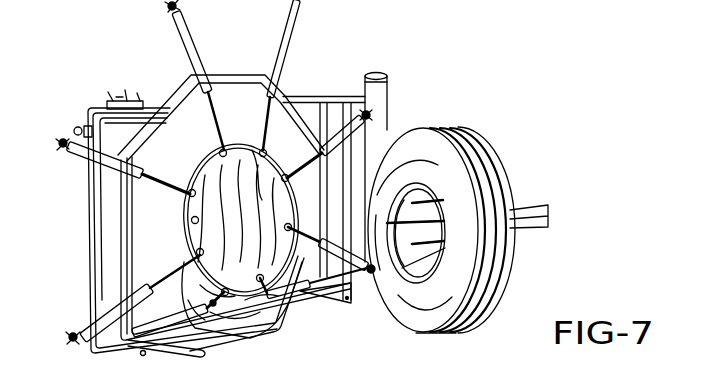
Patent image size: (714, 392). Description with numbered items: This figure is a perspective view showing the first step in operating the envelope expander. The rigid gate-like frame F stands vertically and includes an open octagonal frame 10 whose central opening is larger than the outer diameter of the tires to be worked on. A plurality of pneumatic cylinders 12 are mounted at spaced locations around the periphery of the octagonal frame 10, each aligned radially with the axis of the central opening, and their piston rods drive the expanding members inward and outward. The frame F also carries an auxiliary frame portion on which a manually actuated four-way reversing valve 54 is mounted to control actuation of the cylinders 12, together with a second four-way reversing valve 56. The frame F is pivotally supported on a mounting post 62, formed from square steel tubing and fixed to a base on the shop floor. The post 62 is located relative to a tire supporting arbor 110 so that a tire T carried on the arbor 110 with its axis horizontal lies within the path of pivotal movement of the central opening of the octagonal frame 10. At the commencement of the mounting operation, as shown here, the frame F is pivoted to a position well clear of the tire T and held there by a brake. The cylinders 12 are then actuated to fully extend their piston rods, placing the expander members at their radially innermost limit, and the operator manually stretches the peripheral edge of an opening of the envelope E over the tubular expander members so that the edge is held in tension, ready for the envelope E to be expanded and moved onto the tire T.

The frame F is at (318, 87).
The mounting post 62 is at (390, 105).
The tire T is at (475, 148).
The tire supporting arbor 110 is at (548, 190).
The envelope E is at (245, 322).
The octagonal frame 10 is at (191, 220).
The pneumatic cylinders 12 is at (182, 30).
The four-way reversing valve 54 is at (134, 97).
The second four-way reversing valve 56 is at (74, 128).